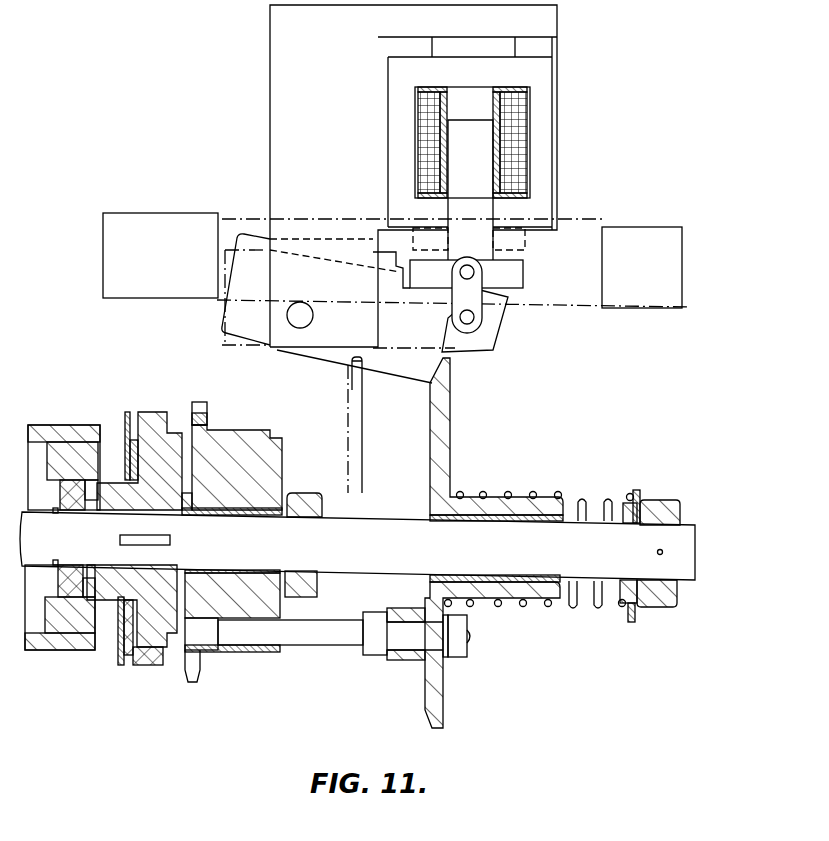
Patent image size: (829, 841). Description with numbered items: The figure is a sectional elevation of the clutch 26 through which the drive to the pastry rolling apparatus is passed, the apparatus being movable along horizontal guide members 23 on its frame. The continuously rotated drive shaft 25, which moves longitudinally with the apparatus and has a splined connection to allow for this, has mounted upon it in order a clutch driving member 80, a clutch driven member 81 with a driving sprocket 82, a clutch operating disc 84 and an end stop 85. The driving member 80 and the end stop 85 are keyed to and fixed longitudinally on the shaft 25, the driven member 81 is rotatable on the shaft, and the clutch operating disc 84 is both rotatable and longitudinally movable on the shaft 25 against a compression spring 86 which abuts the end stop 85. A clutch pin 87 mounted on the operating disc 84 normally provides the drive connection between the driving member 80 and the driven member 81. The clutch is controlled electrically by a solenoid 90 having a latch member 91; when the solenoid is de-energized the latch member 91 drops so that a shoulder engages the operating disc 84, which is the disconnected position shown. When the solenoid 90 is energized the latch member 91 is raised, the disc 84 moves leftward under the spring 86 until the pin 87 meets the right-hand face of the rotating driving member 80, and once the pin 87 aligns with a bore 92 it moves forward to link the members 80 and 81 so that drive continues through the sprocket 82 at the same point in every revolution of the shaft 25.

The horizontal guide member 23 is at (638, 238).
The drive shaft 25 is at (80, 551).
The clutch 26 is at (410, 176).
The clutch driving member 80 is at (153, 422).
The clutch driven member 81 is at (268, 445).
The driving sprocket 82 is at (201, 411).
The clutch operating disc 84 is at (443, 427).
The end stop 85 is at (657, 505).
The compression spring 86 is at (552, 495).
The clutch pin 87 is at (312, 630).
The solenoid 90 is at (530, 155).
The latch member 91 is at (487, 337).
The bore 92 is at (148, 632).